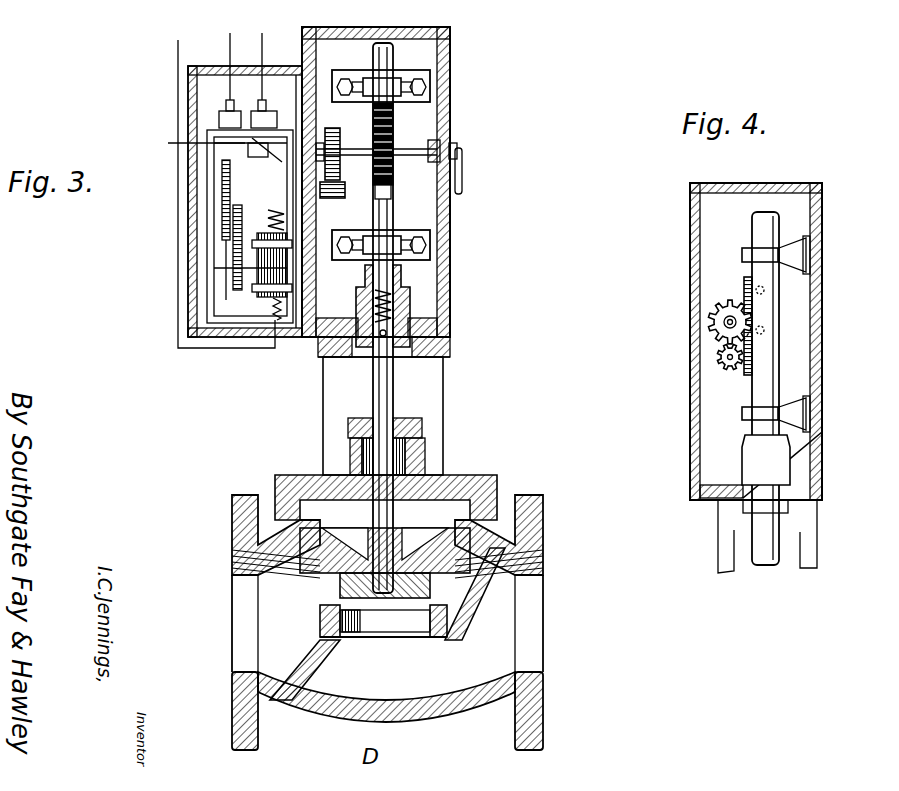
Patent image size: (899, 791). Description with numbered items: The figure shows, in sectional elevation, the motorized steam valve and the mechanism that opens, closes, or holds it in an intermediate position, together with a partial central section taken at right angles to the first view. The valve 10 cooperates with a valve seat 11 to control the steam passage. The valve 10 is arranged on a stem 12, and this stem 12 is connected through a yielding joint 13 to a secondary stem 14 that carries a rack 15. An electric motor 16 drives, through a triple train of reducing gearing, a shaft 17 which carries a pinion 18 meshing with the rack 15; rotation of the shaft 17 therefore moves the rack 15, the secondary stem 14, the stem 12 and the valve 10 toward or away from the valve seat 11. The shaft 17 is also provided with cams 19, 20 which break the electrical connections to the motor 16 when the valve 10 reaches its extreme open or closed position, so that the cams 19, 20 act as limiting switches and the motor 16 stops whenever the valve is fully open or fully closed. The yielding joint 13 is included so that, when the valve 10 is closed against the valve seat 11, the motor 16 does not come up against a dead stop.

In FIG. 3, the valve 10 is at (330, 592).
In FIG. 3, the valve seat 11 is at (447, 620).
In FIG. 3, the stem 12 is at (378, 383).
In FIG. 3, the yielding joint 13 is at (410, 300).
In FIG. 3, the secondary stem 14 is at (393, 207).
In FIG. 4, the secondary stem 14 is at (768, 310).
In FIG. 3, the rack 15 is at (393, 124).
In FIG. 4, the rack 15 is at (745, 286).
In FIG. 3, the electric motor 16 is at (240, 268).
In FIG. 3, the shaft 17 is at (426, 156).
In FIG. 4, the shaft 17 is at (718, 362).
In FIG. 3, the pinion 18 is at (368, 172).
In FIG. 4, the pinion 18 is at (708, 330).
In FIG. 3, the cam 19 is at (259, 230).
In FIG. 3, the cam 20 is at (222, 201).